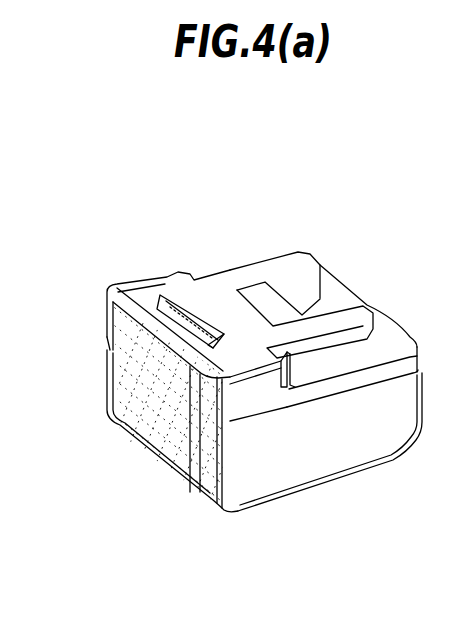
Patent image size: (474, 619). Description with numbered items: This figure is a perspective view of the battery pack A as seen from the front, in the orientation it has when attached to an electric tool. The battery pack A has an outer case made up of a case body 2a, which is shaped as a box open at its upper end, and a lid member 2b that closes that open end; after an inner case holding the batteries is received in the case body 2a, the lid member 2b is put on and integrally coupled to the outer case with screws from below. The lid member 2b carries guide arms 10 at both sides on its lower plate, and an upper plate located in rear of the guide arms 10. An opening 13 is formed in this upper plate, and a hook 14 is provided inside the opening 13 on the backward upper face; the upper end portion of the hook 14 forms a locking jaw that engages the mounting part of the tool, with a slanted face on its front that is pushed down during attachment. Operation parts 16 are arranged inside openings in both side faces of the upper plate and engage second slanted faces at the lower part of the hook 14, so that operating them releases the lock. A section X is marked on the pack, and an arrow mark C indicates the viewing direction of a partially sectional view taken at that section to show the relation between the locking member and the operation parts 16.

The battery pack A is at (123, 264).
The section X is at (150, 280).
The guide arms 10 is at (373, 311).
The opening 13 is at (203, 315).
The hook 14 is at (187, 305).
The operation parts 16 is at (278, 397).
The case body 2a is at (367, 438).
The lid member 2b is at (107, 330).
The arrow mark C is at (92, 421).